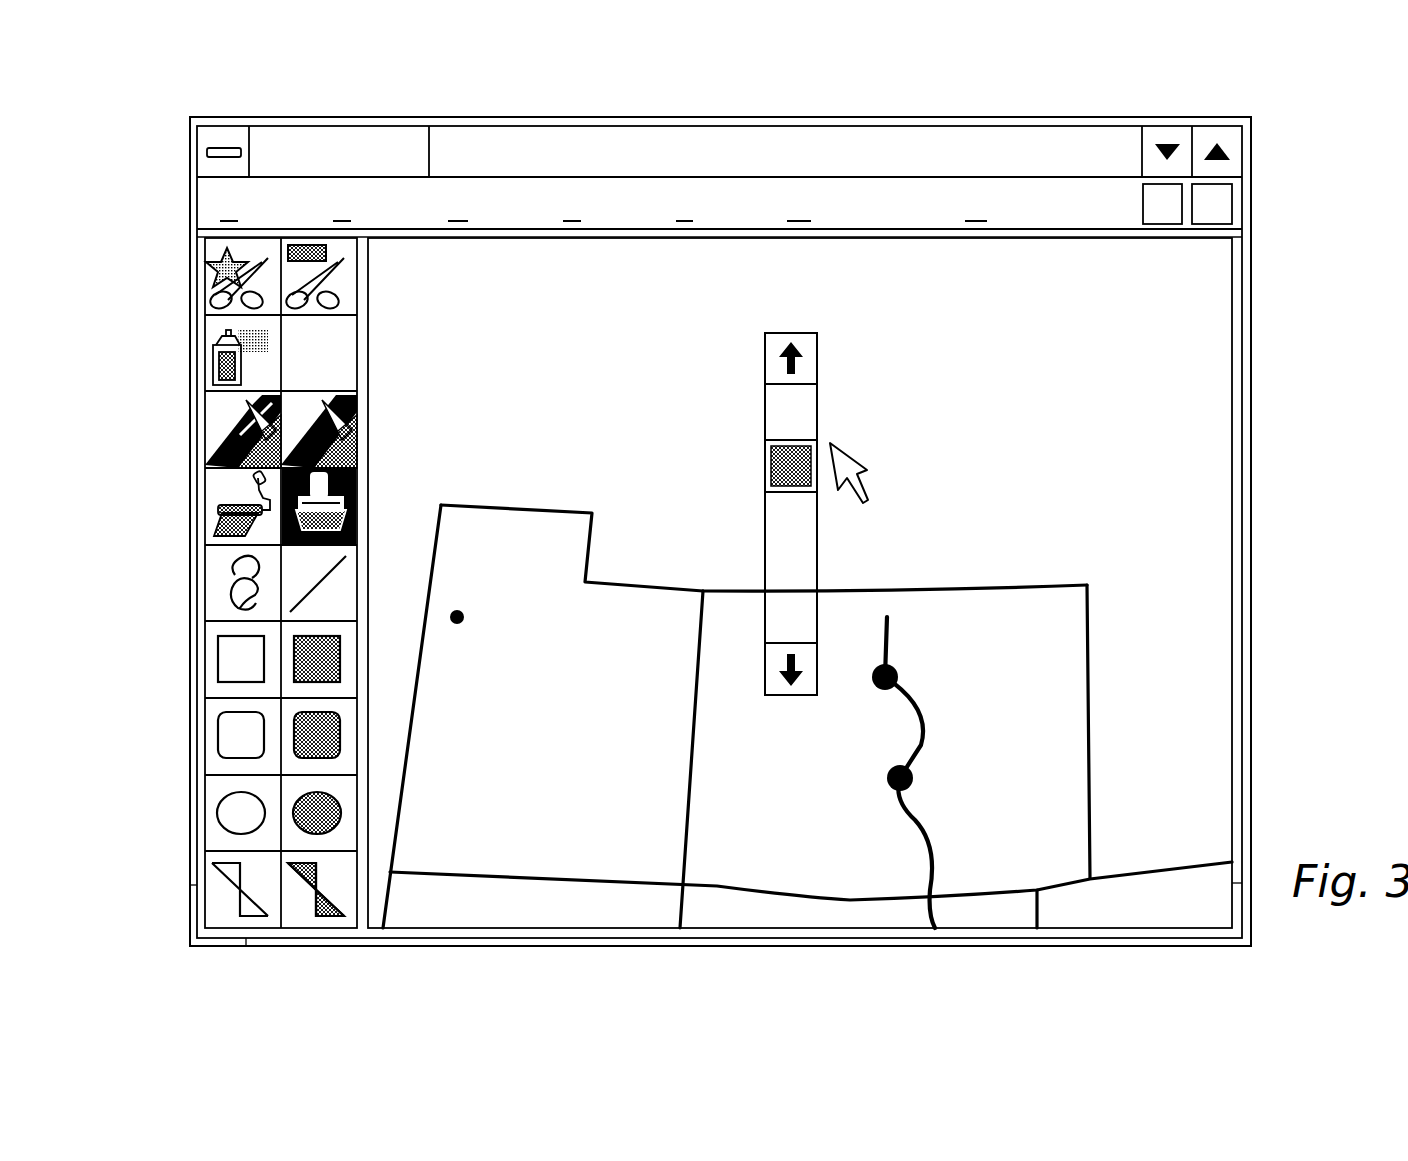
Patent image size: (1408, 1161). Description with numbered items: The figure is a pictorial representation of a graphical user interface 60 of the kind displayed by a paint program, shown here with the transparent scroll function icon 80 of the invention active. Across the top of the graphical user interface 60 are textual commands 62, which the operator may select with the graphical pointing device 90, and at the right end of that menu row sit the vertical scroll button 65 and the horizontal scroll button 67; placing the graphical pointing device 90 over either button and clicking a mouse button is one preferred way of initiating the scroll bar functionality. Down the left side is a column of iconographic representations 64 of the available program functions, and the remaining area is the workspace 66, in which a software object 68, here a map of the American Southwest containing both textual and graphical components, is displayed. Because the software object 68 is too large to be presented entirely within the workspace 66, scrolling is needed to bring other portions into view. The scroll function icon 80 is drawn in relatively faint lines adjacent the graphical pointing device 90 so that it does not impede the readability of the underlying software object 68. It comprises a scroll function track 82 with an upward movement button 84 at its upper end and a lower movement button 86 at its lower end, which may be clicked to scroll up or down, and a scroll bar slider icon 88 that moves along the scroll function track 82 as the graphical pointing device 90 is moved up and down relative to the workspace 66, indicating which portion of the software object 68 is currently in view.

The graphical user interface 60 is at (1305, 142).
The textual commands 62 is at (210, 203).
The iconographic representations 64 is at (204, 517).
The vertical scroll button 65 is at (1143, 215).
The workspace 66 is at (1205, 540).
The horizontal scroll button 67 is at (1232, 214).
The software object 68 is at (1050, 707).
The scroll function icon 80 is at (765, 511).
The scroll function track 82 is at (790, 416).
The upward movement button 84 is at (776, 352).
The lower movement button 86 is at (776, 683).
The scroll bar slider icon 88 is at (778, 466).
The graphical pointing device 90 is at (852, 462).